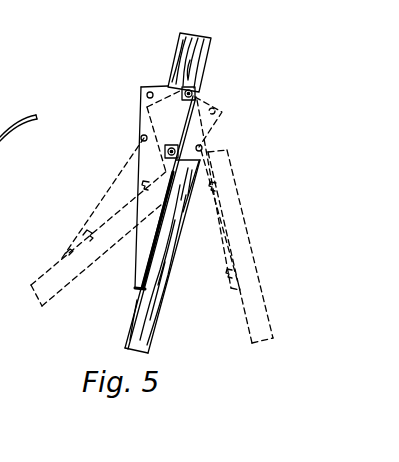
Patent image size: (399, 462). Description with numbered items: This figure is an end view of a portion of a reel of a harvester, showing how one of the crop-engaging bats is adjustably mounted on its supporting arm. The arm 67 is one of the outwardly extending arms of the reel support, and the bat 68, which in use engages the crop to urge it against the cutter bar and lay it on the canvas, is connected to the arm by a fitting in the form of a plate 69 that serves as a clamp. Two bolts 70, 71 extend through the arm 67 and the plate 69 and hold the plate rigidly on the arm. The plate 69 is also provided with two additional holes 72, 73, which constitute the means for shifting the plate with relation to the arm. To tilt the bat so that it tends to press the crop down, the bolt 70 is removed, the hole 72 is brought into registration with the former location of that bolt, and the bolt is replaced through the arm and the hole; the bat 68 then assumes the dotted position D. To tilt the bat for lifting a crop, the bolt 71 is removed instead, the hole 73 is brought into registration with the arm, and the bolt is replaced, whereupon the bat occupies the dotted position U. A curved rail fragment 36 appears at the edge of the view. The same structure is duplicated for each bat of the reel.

The curved rail 36 is at (17, 122).
The arm 67 is at (208, 52).
The bat 68 is at (161, 279).
The plate 69 is at (141, 118).
The bolt 70 is at (196, 92).
The bolt 71 is at (203, 146).
The hole 72 is at (147, 93).
The hole 73 is at (141, 138).
The dotted position D is at (34, 285).
The dotted position U is at (264, 306).